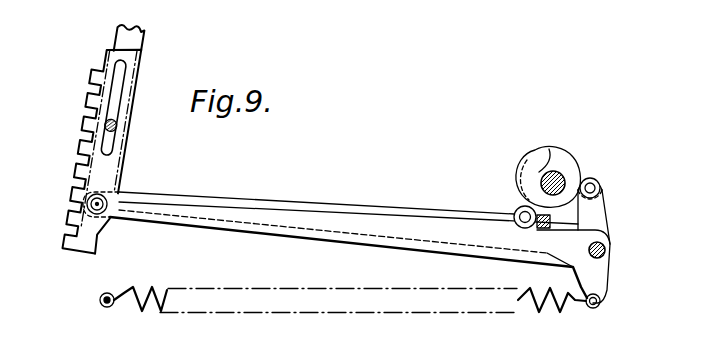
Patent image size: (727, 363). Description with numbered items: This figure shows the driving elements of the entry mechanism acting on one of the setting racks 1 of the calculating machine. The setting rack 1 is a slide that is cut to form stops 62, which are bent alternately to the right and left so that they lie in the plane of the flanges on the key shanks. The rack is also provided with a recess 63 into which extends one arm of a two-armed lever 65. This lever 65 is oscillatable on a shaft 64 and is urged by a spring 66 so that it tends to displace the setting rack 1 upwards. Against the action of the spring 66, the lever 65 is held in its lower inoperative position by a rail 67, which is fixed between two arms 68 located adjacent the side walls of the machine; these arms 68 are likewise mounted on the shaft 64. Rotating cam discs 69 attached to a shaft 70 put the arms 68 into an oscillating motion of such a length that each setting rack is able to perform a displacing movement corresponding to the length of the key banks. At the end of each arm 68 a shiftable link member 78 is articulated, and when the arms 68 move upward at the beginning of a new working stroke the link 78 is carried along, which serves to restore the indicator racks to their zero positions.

The setting rack 1 is at (108, 62).
The shiftable link member 78 is at (120, 33).
The stops 62 is at (68, 204).
The recess 63 is at (108, 203).
The two-armed lever 65 is at (222, 210).
The arms 68 is at (276, 205).
The rail 67 is at (551, 221).
The cam discs 69 is at (552, 162).
The shaft 70 is at (545, 182).
The shaft 64 is at (606, 250).
The spring 66 is at (547, 312).